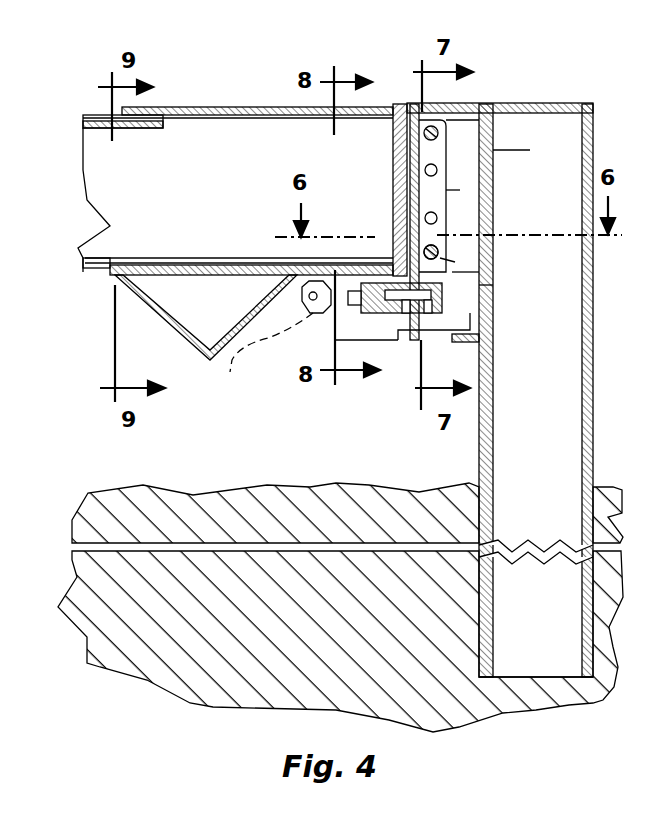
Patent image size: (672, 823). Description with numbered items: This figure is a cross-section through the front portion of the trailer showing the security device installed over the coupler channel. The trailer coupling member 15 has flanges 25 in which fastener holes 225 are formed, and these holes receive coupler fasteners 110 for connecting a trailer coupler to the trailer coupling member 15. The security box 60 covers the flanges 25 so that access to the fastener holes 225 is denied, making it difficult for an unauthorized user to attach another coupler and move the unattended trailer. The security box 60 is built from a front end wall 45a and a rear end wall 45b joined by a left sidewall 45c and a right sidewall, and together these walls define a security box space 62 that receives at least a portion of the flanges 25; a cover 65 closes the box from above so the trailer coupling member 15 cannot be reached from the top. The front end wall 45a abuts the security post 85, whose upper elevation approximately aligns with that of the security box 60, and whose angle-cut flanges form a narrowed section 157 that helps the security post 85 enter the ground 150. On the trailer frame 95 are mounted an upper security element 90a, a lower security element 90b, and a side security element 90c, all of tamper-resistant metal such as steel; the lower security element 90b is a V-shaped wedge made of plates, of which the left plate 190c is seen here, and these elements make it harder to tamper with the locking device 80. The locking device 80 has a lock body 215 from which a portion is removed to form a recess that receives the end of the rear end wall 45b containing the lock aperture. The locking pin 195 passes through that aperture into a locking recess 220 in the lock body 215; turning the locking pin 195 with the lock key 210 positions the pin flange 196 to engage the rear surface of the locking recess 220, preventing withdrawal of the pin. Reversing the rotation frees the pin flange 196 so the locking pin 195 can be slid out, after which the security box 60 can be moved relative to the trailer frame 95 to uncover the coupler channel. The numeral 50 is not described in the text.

The trailer coupling member 15 is at (446, 160).
The flange 25 is at (462, 272).
The front end wall 45a is at (482, 325).
The rear end wall 45b is at (412, 104).
The left sidewall 45c is at (462, 258).
The building structure 50 is at (12, 723).
The security box 60 is at (443, 104).
The security box space 62 is at (458, 220).
The cover 65 is at (455, 104).
The locking device 80 is at (350, 322).
The security post 85 is at (593, 468).
The upper security element 90a is at (180, 107).
The lower security element 90b is at (135, 290).
The side security element 90c is at (392, 104).
The trailer frame 95 is at (83, 118).
The coupler fastener 110 is at (455, 248).
The ground 150 is at (436, 703).
The narrowed section 157 is at (0, 618).
The left plate 190c is at (197, 300).
The locking pin 195 is at (385, 320).
The pin flange 196 is at (458, 300).
The lock key 210 is at (259, 356).
The lock body 215 is at (410, 320).
The locking recess 220 is at (460, 330).
The fastener hole 225 is at (458, 218).